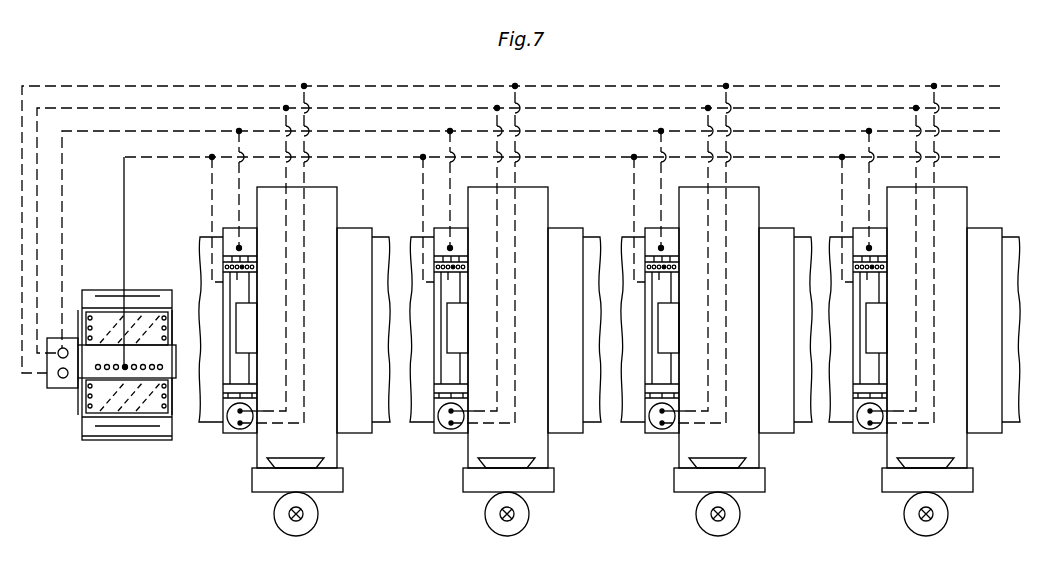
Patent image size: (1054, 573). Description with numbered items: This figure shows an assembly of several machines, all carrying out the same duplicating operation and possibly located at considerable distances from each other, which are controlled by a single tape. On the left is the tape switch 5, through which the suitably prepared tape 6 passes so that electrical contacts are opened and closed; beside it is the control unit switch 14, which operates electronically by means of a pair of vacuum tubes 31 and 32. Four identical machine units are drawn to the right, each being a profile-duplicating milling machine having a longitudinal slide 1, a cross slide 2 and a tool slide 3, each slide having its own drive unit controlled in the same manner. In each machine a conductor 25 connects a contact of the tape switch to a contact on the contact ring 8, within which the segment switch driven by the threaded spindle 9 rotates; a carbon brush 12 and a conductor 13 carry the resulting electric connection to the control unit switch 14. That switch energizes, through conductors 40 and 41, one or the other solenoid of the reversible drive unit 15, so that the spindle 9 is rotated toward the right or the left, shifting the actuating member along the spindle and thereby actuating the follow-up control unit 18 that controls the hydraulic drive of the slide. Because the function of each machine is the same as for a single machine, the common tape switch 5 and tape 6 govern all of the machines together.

The longitudinal slide 1 is at (362, 427).
The cross slide 2 is at (331, 199).
The tool slide 3 is at (333, 488).
The tape switch 5 is at (127, 338).
The tape 6 is at (124, 422).
The contact ring 8 is at (252, 269).
The threaded spindle 9 is at (237, 295).
The carbon brush 12 is at (239, 248).
The conductor 13 is at (379, 130).
The control unit switch 14 is at (61, 357).
The reversible drive unit 15 is at (228, 433).
The follow-up control unit 18 is at (247, 338).
The conductor 25 is at (212, 213).
The vacuum tube 31 is at (60, 378).
The vacuum tube 32 is at (66, 348).
The conductor 40 is at (212, 107).
The conductor 41 is at (158, 86).